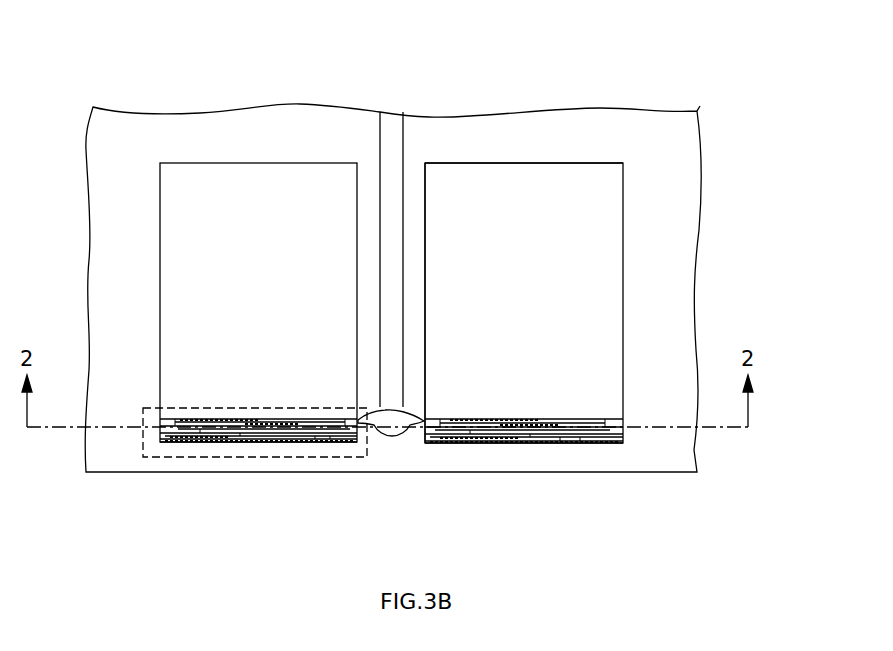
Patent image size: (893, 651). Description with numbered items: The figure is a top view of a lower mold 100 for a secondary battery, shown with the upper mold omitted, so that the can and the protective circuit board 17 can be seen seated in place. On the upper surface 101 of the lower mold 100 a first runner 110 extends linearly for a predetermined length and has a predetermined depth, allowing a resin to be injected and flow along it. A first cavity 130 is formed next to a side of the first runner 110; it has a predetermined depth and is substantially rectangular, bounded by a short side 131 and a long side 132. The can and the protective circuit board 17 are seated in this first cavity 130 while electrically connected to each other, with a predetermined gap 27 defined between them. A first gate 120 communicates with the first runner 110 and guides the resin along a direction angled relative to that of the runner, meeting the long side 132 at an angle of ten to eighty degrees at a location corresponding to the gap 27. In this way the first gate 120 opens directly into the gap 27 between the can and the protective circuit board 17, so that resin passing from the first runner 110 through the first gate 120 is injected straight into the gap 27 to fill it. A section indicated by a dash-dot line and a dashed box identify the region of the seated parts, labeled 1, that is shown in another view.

The lower mold 100 is at (695, 142).
The upper surface 101 is at (665, 186).
The first runner 110 is at (388, 146).
The first gate 120 is at (410, 437).
The first cavity 130 is at (620, 164).
The short side 131 is at (520, 168).
The long side 132 is at (427, 200).
The display unit 1 is at (256, 457).
The protective circuit board 17 is at (527, 447).
The gap 27 is at (303, 455).